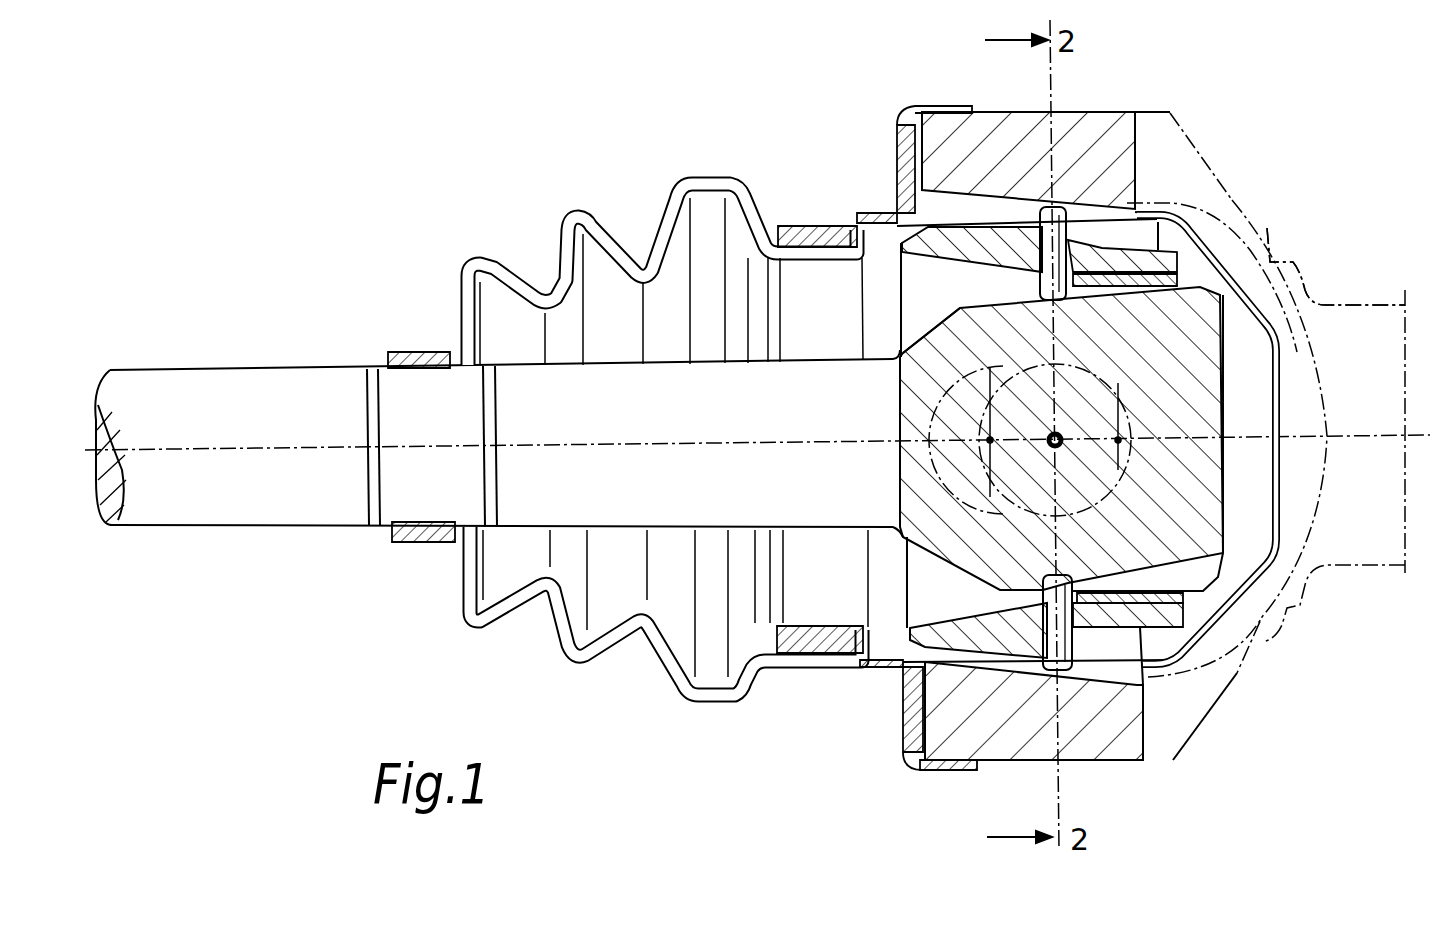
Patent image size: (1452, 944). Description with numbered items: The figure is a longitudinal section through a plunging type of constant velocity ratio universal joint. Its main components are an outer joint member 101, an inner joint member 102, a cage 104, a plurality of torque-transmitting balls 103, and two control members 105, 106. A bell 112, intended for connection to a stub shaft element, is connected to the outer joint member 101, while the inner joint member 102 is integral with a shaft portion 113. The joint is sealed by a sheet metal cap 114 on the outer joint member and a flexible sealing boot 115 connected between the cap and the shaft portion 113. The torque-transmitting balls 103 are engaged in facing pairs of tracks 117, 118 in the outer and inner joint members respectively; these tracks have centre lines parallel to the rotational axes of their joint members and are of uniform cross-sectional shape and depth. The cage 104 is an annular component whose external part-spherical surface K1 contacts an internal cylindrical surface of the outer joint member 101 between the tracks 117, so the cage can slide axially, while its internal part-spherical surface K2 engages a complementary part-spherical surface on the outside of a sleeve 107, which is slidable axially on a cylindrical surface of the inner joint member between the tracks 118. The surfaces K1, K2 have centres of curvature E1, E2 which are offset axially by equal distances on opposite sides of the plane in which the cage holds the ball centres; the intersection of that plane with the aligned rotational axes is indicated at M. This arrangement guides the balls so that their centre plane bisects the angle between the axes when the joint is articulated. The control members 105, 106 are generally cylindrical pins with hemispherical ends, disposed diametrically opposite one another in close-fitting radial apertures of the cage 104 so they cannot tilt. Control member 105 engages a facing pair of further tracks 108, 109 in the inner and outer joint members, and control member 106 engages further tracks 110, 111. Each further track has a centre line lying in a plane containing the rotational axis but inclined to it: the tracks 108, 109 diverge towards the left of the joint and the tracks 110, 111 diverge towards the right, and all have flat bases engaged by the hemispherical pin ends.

The outer joint member 101 is at (957, 735).
The inner joint member 102 is at (1205, 527).
The torque-transmitting balls 103 is at (1080, 387).
The cage 104 is at (968, 208).
The control member 105 is at (1052, 210).
The control member 106 is at (1047, 675).
The sleeve 107 is at (1210, 647).
The further track 108 is at (993, 303).
The further track 109 is at (941, 187).
The further track 110 is at (1200, 573).
The further track 111 is at (1118, 668).
The bell 112 is at (1367, 302).
The shaft portion 113 is at (612, 395).
The sheet metal cap 114 is at (856, 214).
The flexible sealing boot 115 is at (707, 176).
The tracks 117 is at (1271, 250).
The tracks 118 is at (1336, 266).
The external part-spherical surface K1 is at (943, 195).
The internal part-spherical surface K2 is at (1118, 292).
The point of intersection M is at (1055, 440).
The centre of curvature E1 is at (1012, 434).
The centre of curvature E2 is at (1148, 442).